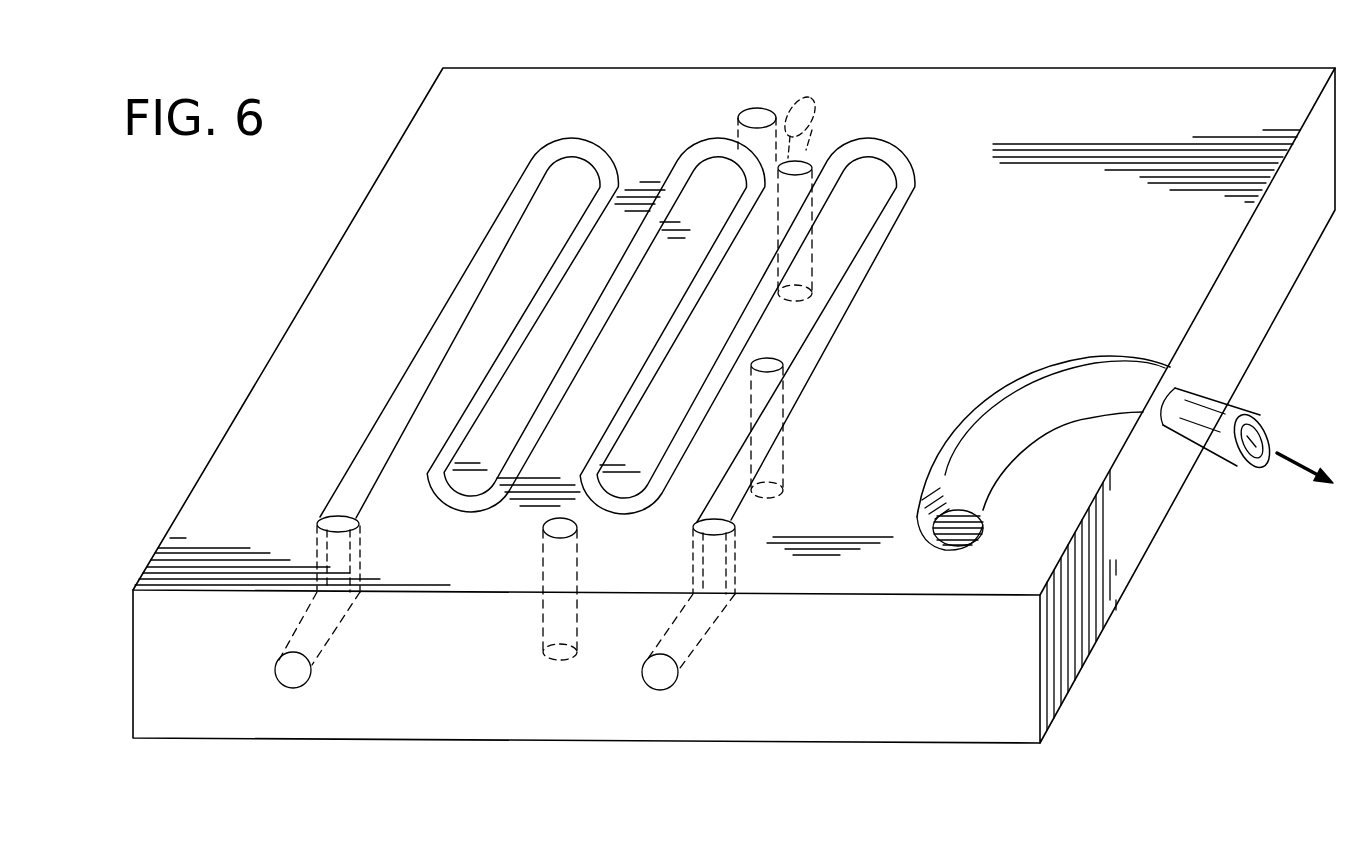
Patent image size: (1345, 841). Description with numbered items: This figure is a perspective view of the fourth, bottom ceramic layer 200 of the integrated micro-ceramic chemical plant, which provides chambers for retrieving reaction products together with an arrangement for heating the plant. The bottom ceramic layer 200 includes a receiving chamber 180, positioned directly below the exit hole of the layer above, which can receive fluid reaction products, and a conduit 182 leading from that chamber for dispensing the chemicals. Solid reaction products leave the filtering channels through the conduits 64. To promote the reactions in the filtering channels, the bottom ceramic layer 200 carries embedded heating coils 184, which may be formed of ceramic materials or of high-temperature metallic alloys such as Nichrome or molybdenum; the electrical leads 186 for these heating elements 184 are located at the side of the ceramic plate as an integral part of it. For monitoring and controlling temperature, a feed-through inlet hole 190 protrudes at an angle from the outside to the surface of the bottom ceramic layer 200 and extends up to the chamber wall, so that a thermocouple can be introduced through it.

The bottom ceramic layer 200 is at (1167, 629).
The embedded heating coils 184 is at (880, 235).
The electrical leads 186 is at (296, 672).
The conduits 64 is at (800, 162).
The feed-through inlet hole 190 is at (806, 96).
The receiving chamber 180 is at (960, 533).
The conduit 182 is at (1237, 408).